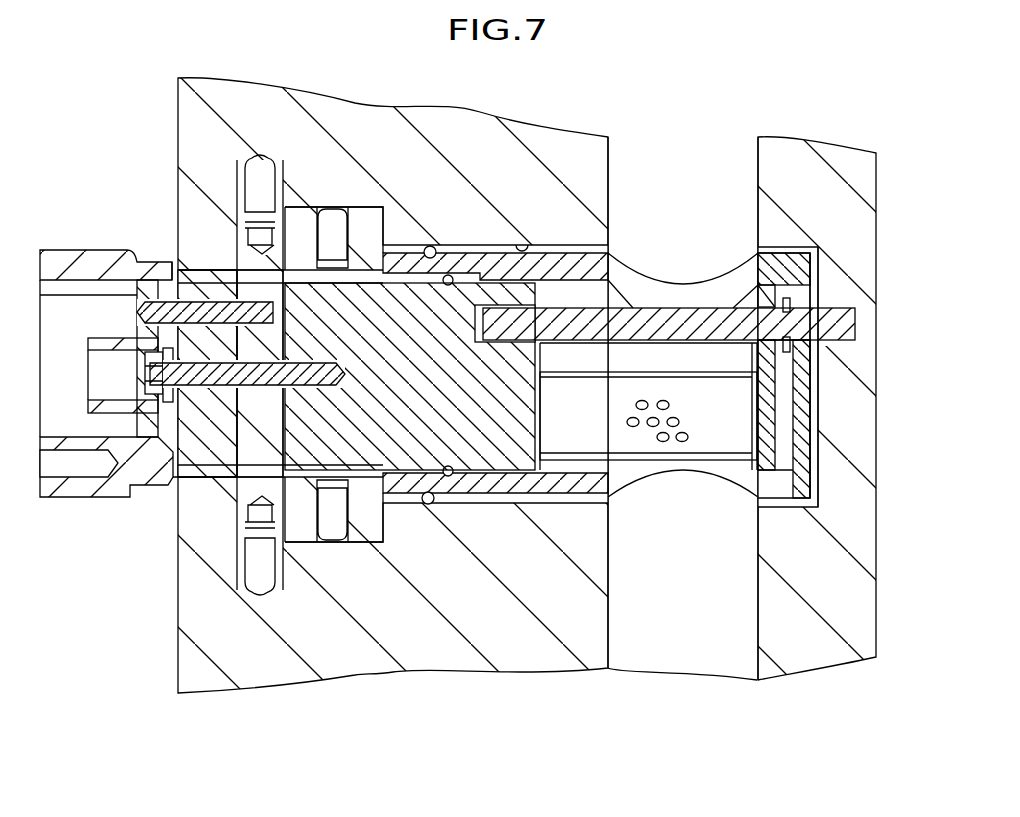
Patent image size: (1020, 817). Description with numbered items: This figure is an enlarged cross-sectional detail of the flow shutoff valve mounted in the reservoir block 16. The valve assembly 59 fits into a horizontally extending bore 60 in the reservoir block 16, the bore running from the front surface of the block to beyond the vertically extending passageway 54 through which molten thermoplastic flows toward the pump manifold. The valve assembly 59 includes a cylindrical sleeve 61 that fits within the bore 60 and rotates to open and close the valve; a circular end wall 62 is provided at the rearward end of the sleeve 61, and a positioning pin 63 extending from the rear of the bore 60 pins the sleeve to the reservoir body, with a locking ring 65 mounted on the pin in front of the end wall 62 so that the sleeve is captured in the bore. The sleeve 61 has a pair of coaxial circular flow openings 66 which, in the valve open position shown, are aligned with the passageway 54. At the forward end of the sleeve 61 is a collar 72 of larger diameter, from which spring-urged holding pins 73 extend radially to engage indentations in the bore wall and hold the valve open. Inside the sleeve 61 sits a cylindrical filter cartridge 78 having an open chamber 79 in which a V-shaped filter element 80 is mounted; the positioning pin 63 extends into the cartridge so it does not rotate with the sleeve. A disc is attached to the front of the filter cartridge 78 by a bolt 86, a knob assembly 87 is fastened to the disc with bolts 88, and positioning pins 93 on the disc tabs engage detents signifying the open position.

The reservoir block 16 is at (860, 235).
The passageway 54 is at (757, 152).
The valve assembly 59 is at (143, 212).
The bore 60 is at (525, 247).
The sleeve 61 is at (608, 262).
The end wall 62 is at (805, 413).
The positioning pin 63 is at (808, 310).
The locking ring 65 is at (792, 355).
The flow openings 66 is at (683, 297).
The collar 72 is at (365, 218).
The holding pins 73 is at (333, 208).
The filter cartridge 78 is at (438, 272).
The open chamber 79 is at (597, 332).
The filter element 80 is at (724, 437).
The bolt 86 is at (197, 390).
The knob assembly 87 is at (74, 488).
The bolts 88 is at (140, 375).
The positioning pins 93 is at (262, 158).